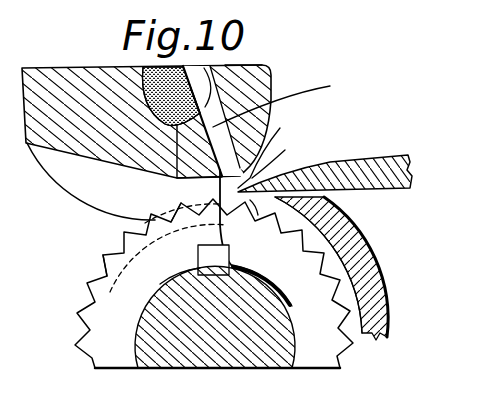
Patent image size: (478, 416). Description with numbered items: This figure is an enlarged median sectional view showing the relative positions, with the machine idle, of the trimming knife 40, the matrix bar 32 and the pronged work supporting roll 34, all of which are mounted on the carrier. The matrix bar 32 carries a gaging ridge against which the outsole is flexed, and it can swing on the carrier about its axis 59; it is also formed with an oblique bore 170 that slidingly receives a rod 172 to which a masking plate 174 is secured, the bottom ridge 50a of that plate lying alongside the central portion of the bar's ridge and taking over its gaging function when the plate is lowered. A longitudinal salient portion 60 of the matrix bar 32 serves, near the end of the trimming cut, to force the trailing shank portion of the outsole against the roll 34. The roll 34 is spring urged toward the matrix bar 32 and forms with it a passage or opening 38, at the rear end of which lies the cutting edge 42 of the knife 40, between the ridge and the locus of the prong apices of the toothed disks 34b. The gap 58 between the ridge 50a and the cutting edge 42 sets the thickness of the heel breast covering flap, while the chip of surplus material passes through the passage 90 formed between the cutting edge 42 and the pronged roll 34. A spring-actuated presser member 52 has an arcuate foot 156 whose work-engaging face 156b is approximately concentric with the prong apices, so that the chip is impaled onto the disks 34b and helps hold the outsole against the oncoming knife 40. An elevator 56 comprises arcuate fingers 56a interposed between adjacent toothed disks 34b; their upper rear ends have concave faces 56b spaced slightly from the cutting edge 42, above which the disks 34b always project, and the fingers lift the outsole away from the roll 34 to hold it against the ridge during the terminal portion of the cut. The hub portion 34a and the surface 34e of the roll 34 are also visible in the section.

The matrix bar 32 is at (272, 79).
The axis 59 is at (140, 67).
The oblique bore 170 is at (228, 66).
The rod 172 is at (177, 180).
The masking plate 174 is at (330, 86).
The bottom ridge 50a is at (280, 128).
The gap 58 is at (285, 150).
The longitudinal salient portion 60 is at (118, 181).
The knife 40 is at (363, 157).
The spring-actuated presser member 52 is at (386, 264).
The arcuate foot 156 is at (388, 309).
The work-engaging face 156b is at (315, 237).
The pronged outsole supporting roll 34 is at (84, 361).
The hub 34a is at (192, 350).
The toothed disks 34b is at (120, 366).
The hub surface 34e is at (202, 268).
The elevator 56 is at (168, 248).
The arcuate fingers 56a is at (100, 268).
The concave faces 56b is at (177, 205).
The cutting edge 42 is at (223, 214).
The passage 90 is at (253, 203).
The passage or opening 38 is at (287, 302).